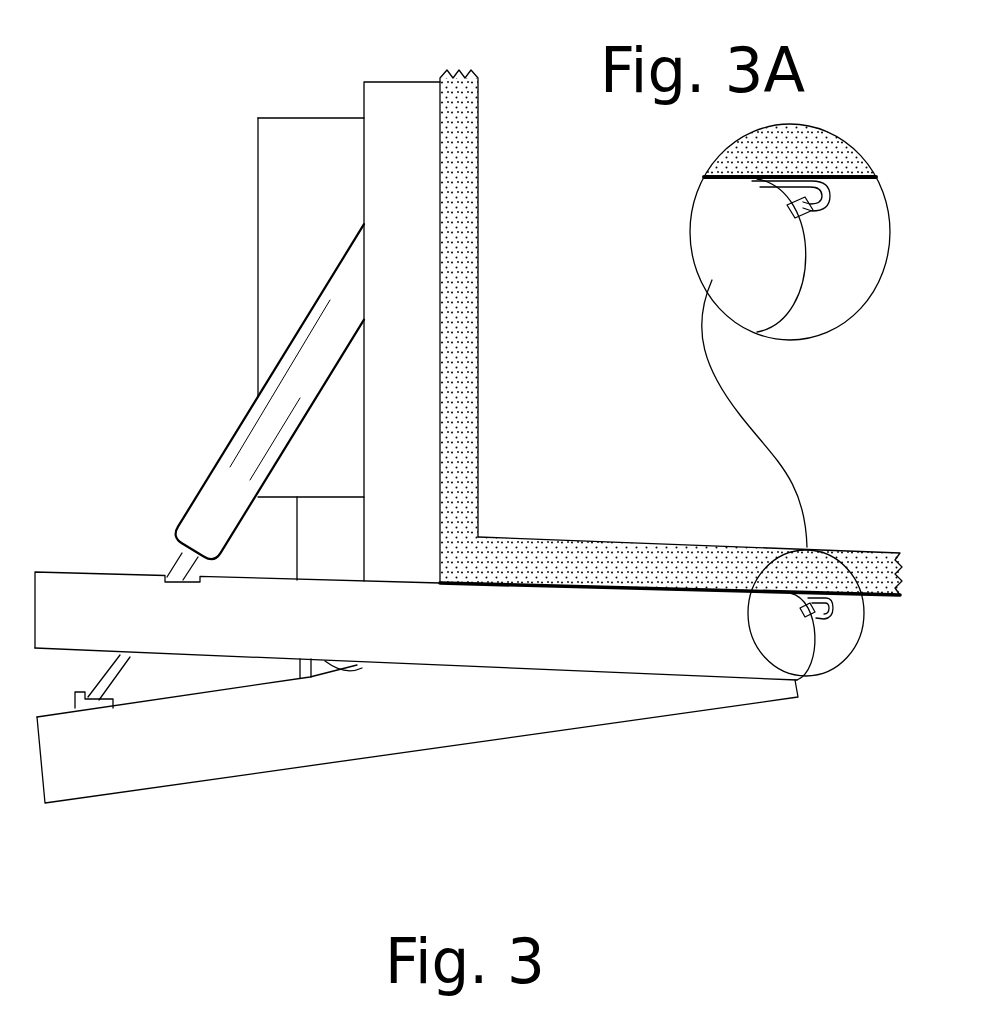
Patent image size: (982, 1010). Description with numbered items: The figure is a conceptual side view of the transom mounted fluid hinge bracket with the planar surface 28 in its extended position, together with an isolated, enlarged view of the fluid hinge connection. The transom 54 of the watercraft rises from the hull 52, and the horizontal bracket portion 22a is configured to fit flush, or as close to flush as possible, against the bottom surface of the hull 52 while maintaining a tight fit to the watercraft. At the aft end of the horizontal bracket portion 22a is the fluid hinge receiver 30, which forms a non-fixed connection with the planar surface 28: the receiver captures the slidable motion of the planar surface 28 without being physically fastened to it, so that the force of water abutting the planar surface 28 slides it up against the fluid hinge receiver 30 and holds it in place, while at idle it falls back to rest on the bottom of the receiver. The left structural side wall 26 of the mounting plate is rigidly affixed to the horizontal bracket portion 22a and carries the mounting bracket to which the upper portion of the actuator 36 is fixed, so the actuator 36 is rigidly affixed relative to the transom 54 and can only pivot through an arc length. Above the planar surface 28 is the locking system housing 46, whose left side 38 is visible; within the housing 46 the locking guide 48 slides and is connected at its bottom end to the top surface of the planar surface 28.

In FIG. 3, the horizontal bracket portion 22a is at (47, 610).
In FIG. 3, the left structural side wall 26 is at (410, 150).
In FIG. 3, the planar surface 28 is at (162, 762).
In FIG. 3A, the planar surface 28 is at (827, 210).
In FIG. 3A, the fluid hinge receiver 30 is at (828, 198).
In FIG. 3, the actuator 36 is at (220, 492).
In FIG. 3, the left side of housing 38 is at (278, 222).
In FIG. 3, the housing 46 is at (278, 118).
In FIG. 3, the locking guide 48 is at (360, 663).
In FIG. 3, the hull 52 is at (623, 584).
In FIG. 3, the transom 54 is at (460, 422).